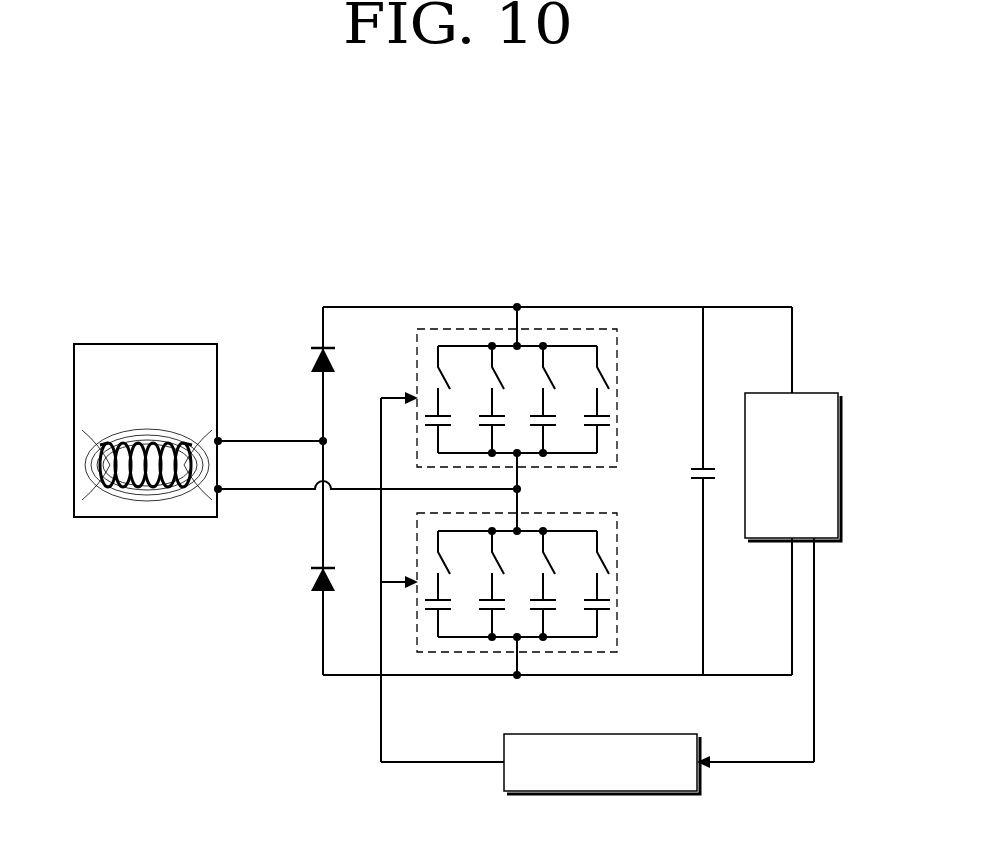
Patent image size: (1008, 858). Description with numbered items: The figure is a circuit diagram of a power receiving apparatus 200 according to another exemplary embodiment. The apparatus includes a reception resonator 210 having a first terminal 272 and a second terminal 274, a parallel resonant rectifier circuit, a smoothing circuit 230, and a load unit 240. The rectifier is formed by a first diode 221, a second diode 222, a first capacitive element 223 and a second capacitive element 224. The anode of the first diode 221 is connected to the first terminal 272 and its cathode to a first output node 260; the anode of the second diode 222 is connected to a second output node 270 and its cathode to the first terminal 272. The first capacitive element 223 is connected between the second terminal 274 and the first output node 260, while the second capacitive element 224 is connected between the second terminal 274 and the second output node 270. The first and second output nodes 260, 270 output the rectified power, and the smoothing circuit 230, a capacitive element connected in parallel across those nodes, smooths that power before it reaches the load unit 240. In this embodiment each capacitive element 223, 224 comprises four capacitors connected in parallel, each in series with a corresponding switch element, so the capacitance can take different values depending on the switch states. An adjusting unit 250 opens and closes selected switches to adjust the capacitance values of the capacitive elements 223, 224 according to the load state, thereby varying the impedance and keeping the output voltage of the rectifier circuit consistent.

The power receiving apparatus 200 is at (432, 196).
The reception resonator 210 is at (130, 517).
The first diode 221 is at (313, 348).
The second diode 222 is at (313, 568).
The first capacitive element 223 is at (577, 329).
The second capacitive element 224 is at (600, 513).
The smoothing circuit 230 is at (693, 469).
The load unit 240 is at (822, 393).
The adjusting unit 250 is at (617, 791).
The first output node 260 is at (517, 307).
The second output node 270 is at (517, 675).
The first terminal 272 is at (218, 441).
The second terminal 274 is at (218, 489).